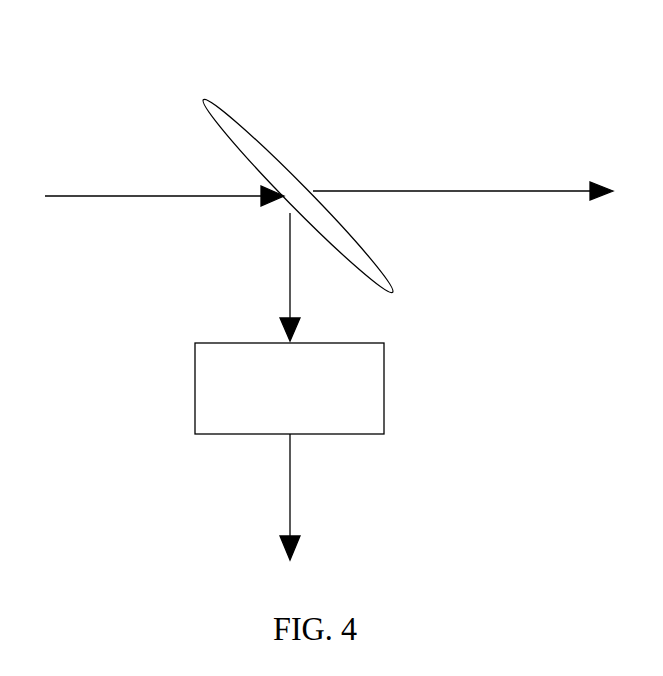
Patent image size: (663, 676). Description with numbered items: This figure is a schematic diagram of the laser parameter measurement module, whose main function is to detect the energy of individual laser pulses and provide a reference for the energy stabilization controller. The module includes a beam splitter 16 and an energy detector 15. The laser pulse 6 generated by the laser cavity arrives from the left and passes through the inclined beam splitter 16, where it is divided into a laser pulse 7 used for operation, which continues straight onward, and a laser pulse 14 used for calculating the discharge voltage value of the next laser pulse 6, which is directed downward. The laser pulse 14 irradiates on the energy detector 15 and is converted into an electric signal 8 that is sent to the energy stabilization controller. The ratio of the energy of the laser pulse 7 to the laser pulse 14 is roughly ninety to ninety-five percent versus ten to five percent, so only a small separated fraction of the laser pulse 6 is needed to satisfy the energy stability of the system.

The laser pulse 6 is at (162, 172).
The laser pulse used for operation 7 is at (463, 169).
The electric signal 8 is at (311, 497).
The laser pulse used for calculating the discharge voltage value 14 is at (268, 277).
The energy detector 15 is at (289, 388).
The beam splitter 16 is at (255, 134).